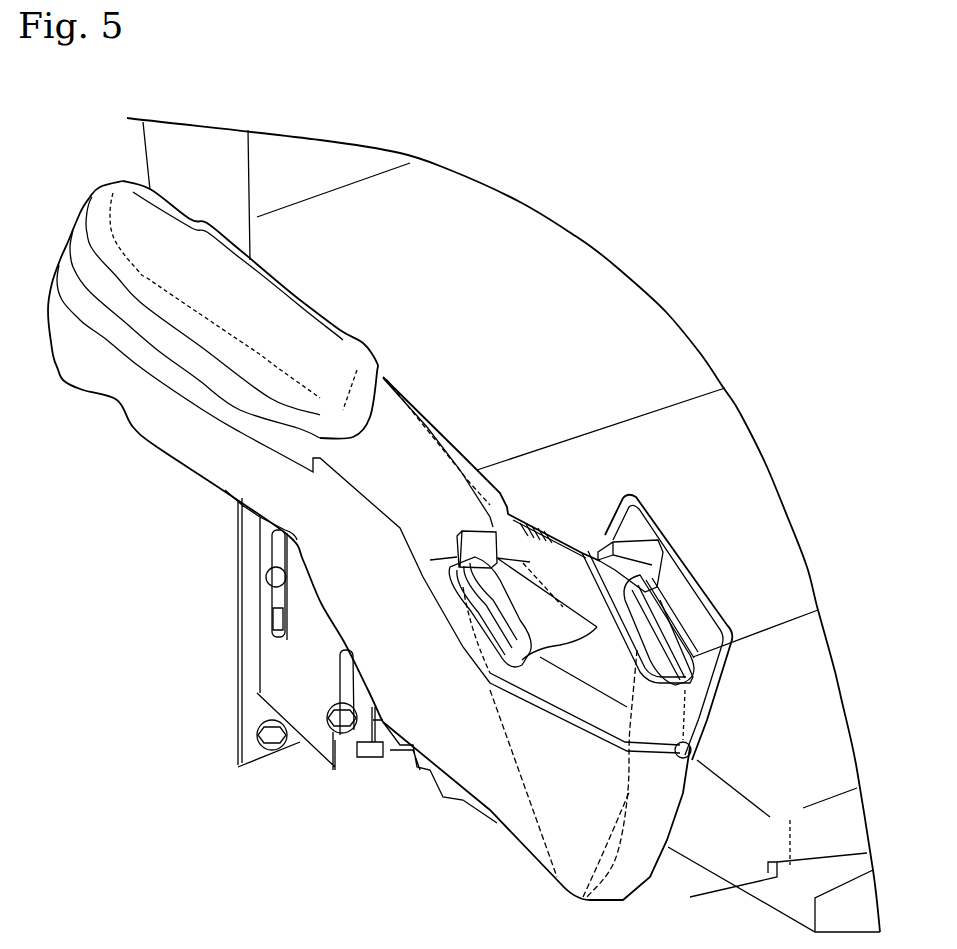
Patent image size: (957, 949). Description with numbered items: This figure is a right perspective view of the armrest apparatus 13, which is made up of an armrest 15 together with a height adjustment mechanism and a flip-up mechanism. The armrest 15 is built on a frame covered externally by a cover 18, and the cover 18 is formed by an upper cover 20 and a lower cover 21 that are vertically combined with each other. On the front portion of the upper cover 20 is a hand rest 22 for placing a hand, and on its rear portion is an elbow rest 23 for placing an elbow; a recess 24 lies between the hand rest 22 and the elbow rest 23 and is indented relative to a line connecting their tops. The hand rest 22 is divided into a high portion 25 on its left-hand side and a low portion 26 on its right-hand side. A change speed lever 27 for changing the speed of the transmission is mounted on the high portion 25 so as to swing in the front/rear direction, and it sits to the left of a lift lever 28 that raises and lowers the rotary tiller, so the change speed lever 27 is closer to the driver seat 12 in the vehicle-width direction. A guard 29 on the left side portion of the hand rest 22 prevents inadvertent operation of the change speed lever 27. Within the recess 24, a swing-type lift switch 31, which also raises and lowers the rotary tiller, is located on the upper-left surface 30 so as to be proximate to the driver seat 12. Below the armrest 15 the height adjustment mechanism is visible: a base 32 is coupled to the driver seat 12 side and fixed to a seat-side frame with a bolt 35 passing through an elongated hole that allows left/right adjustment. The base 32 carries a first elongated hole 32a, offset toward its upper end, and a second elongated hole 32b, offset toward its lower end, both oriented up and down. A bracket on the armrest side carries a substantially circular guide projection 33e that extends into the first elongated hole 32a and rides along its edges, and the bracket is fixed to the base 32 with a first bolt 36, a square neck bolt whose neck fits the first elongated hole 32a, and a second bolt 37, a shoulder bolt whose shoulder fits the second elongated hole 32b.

The driver seat 12 is at (320, 153).
The armrest apparatus 13 is at (603, 613).
The armrest 15 is at (517, 840).
The cover 18 is at (745, 753).
The upper cover 20 is at (700, 712).
The lower cover 21 is at (667, 793).
The hand rest 22 is at (689, 604).
The elbow rest 23 is at (287, 313).
The recess 24 is at (535, 510).
The high portion 25 is at (645, 630).
The low portion 26 is at (472, 588).
The change speed lever 27 is at (647, 550).
The lift lever 28 is at (470, 527).
The guard 29 is at (700, 615).
The upper-left surface 30 is at (490, 490).
The lift switch 31 is at (535, 525).
The base 32 is at (325, 666).
The first elongated hole 32a is at (280, 543).
The second elongated hole 32b is at (285, 787).
The guide projection 33e is at (274, 620).
The bolt 35 is at (268, 745).
The first bolt 36 is at (268, 579).
The second bolt 37 is at (335, 732).